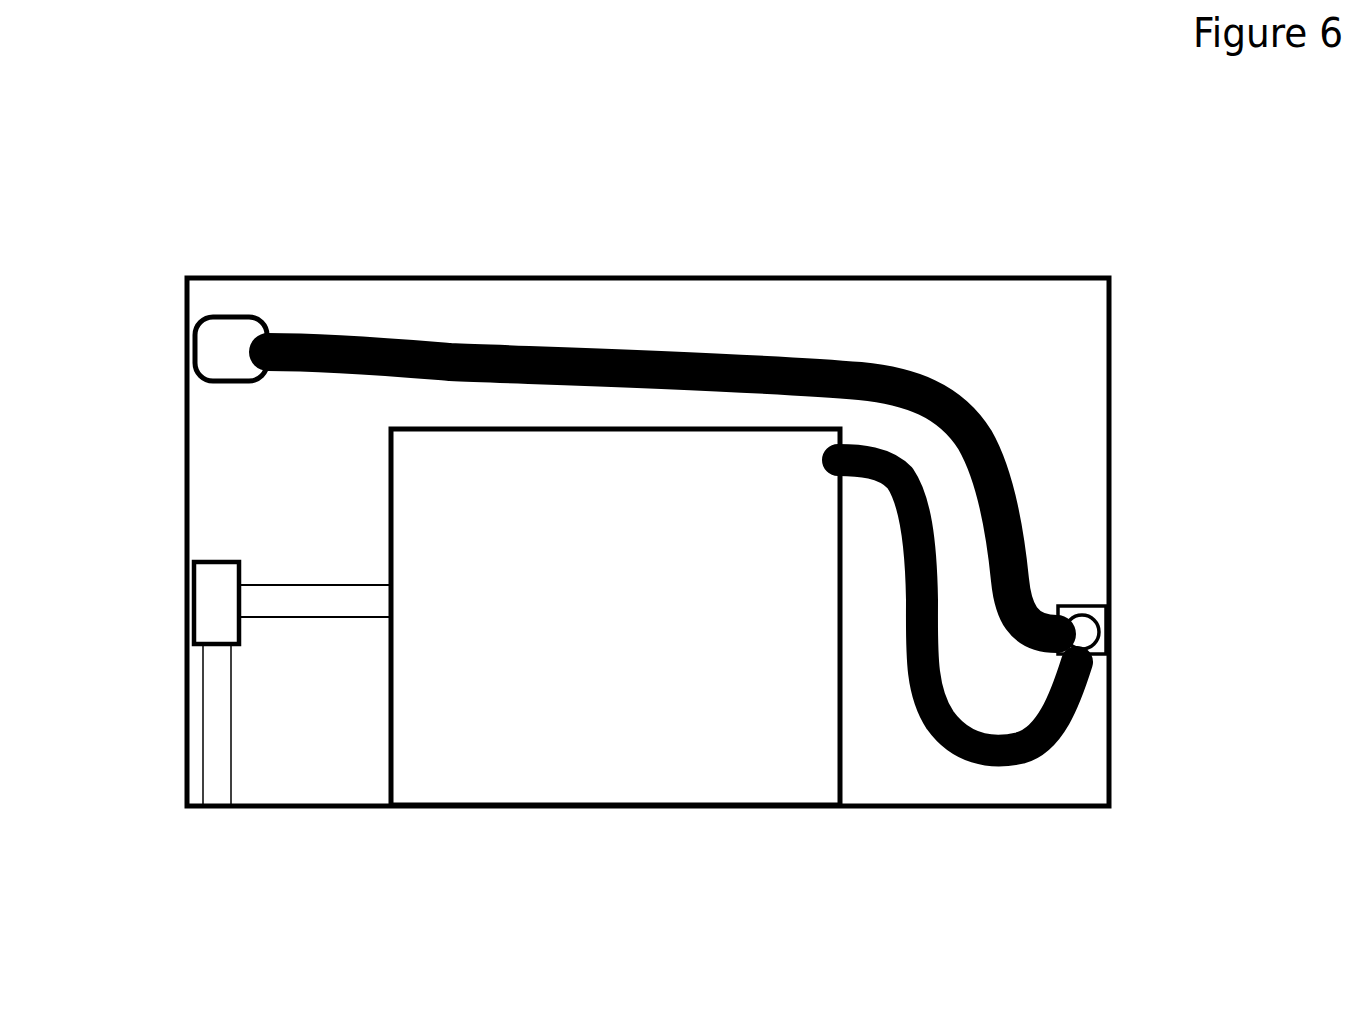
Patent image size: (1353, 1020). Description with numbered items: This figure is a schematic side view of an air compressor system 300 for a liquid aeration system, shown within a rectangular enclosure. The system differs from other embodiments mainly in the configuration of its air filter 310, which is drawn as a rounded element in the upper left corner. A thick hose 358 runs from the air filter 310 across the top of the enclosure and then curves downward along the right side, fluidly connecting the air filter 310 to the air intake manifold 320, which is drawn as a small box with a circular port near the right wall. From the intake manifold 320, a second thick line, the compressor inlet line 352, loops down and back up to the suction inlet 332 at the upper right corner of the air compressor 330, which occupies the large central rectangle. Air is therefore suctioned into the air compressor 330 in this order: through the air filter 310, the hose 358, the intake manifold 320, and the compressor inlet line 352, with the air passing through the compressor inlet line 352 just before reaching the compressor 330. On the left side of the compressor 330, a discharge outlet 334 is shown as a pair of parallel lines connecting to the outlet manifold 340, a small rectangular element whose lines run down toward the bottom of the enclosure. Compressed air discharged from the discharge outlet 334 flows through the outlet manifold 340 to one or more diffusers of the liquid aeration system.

The air compressor system 300 is at (153, 201).
The air filter 310 is at (244, 294).
The air intake manifold 320 is at (1133, 600).
The air compressor 330 is at (866, 775).
The suction inlet 332 is at (838, 455).
The discharge outlet 334 is at (392, 600).
The outlet manifold 340 is at (200, 537).
The compressor inlet line 352 is at (1013, 773).
The hose 358 is at (1007, 465).